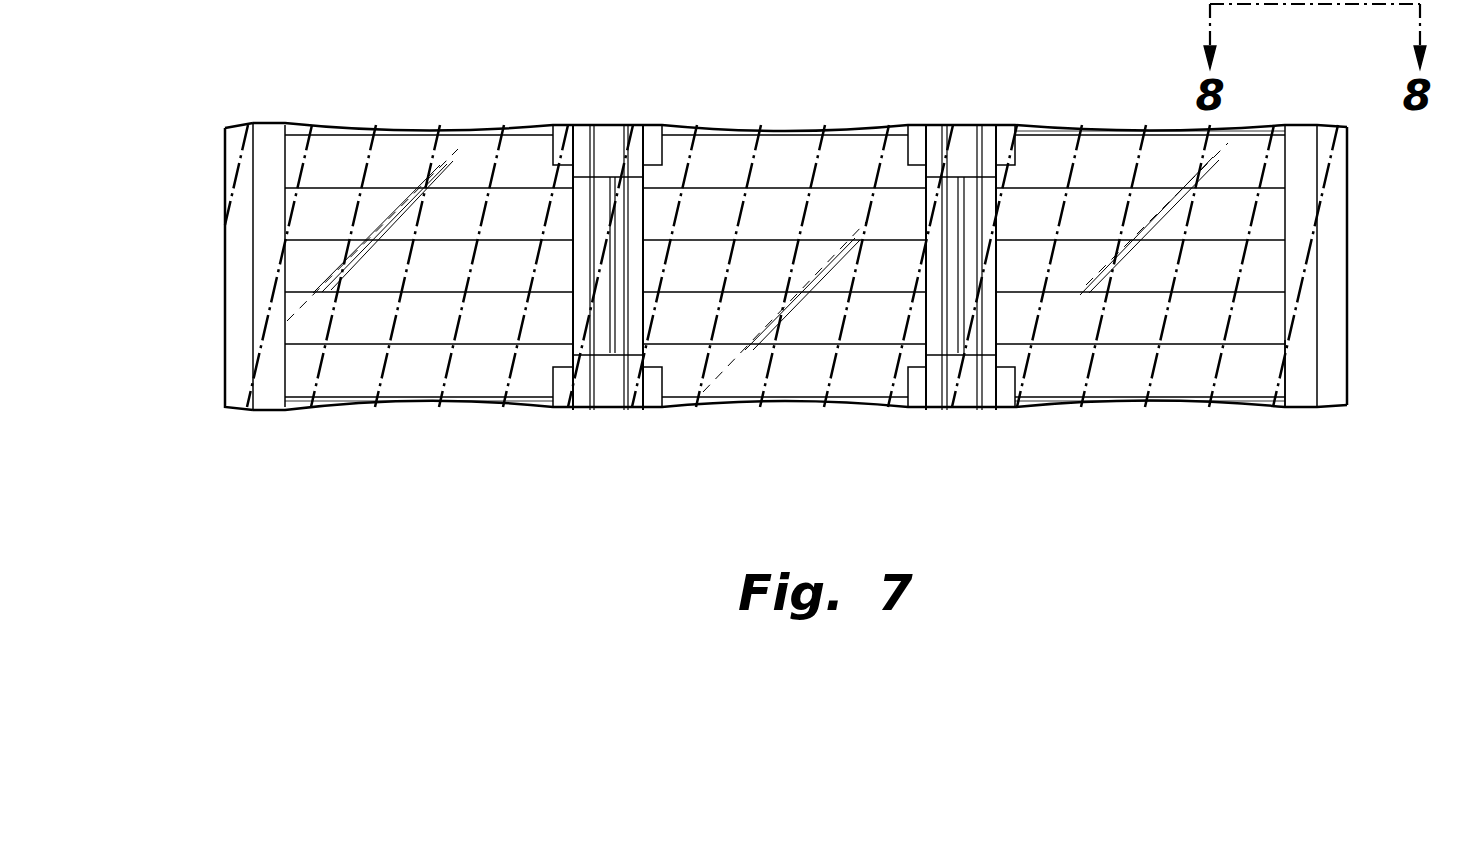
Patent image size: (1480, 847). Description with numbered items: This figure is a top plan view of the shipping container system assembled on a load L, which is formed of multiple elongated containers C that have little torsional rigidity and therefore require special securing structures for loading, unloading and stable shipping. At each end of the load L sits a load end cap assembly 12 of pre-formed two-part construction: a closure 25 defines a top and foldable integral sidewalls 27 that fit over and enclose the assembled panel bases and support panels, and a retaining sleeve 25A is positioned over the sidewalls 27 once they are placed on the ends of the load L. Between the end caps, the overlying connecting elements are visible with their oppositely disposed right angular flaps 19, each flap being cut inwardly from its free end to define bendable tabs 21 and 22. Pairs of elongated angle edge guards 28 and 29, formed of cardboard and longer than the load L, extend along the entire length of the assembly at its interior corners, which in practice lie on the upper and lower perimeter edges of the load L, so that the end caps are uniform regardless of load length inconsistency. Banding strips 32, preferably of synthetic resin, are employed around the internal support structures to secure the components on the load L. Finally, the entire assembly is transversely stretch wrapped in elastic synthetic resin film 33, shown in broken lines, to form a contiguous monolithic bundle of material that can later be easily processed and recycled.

The load end cap assembly 12 is at (1376, 163).
The right angular flap 19 is at (612, 133).
The bendable tab 21 is at (570, 133).
The bendable tab 22 is at (652, 135).
The closure 25 is at (1362, 249).
The retaining sleeve 25A is at (1305, 379).
The foldable integral sidewall 27 is at (1337, 298).
The elongated angle edge guard 28 is at (1167, 132).
The elongated angle edge guard 29 is at (460, 398).
The banding strip 32 is at (592, 123).
The elastic synthetic resin film 33 is at (330, 313).
The elongated container C is at (1112, 222).
The load L is at (1097, 155).